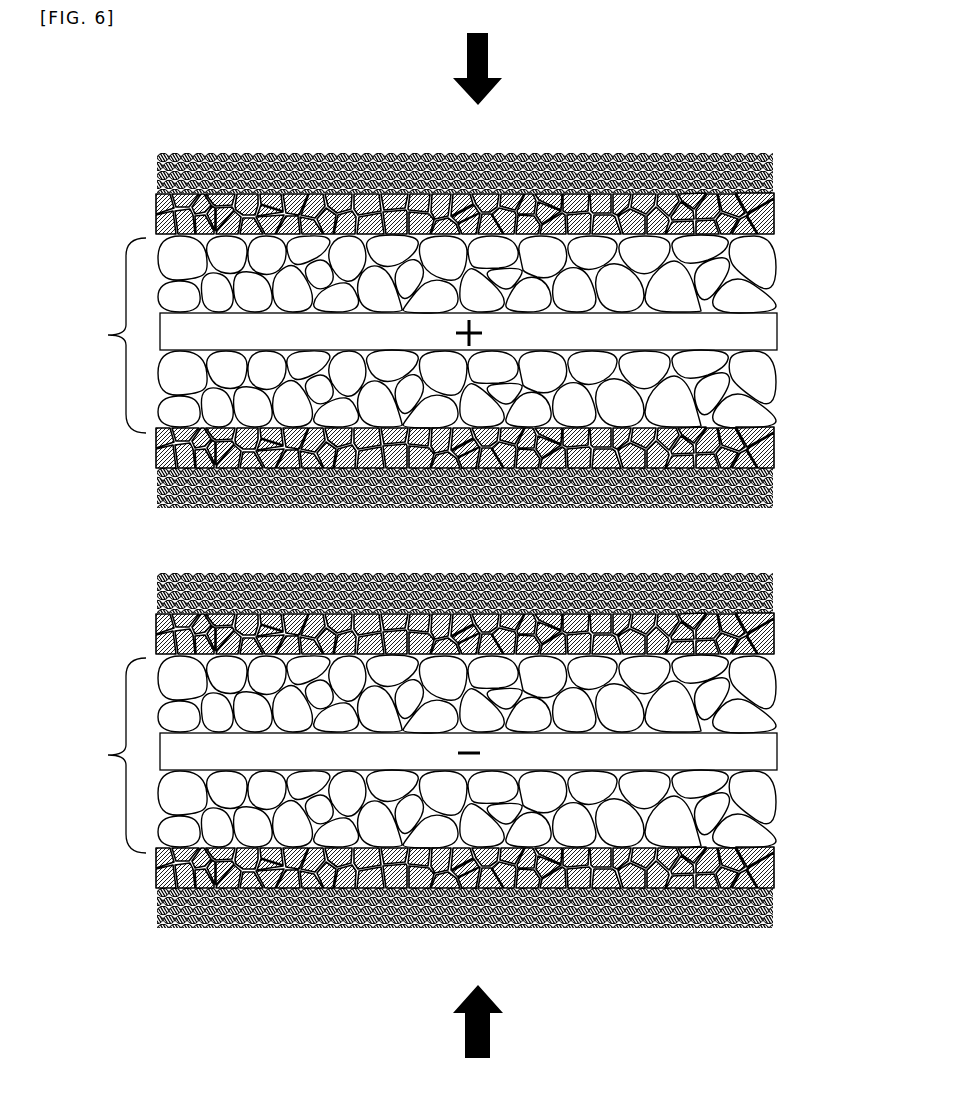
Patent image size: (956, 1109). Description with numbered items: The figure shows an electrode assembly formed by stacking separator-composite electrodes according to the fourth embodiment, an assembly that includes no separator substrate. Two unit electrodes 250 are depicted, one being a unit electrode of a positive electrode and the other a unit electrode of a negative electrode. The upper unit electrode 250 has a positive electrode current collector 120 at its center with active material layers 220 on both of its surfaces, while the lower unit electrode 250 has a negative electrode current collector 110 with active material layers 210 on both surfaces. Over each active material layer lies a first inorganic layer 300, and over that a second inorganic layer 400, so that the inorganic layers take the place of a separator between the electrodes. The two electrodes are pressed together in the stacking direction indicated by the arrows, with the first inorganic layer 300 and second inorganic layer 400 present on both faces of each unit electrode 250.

The negative electrode current collector 110 is at (776, 754).
The positive electrode current collector 120 is at (776, 334).
The active material layer 210 is at (775, 699).
The active material layer 220 is at (775, 279).
The unit electrode 250 is at (106, 335).
The first inorganic layer 300 is at (773, 221).
The second inorganic layer 400 is at (770, 162).